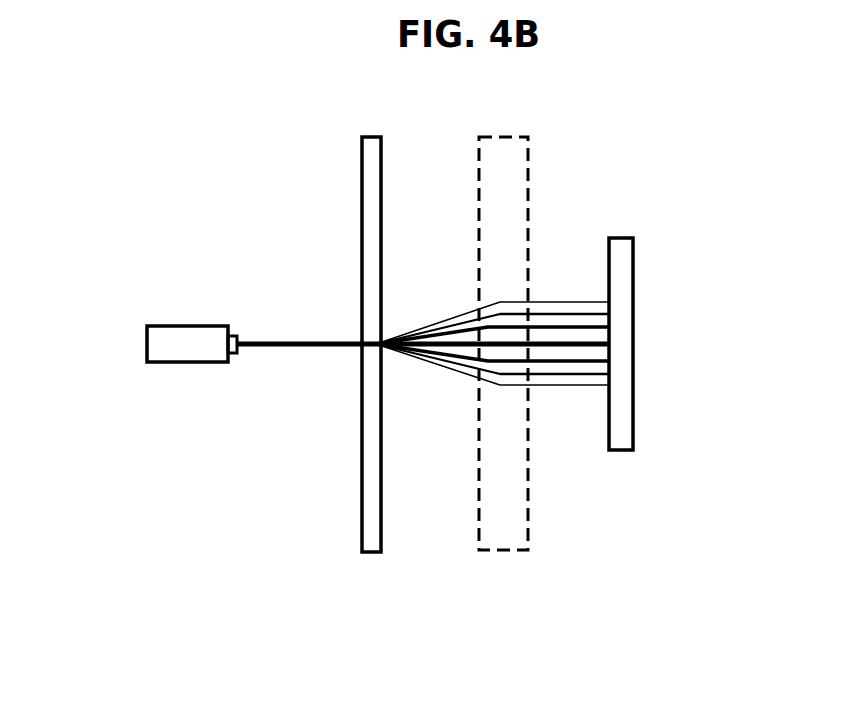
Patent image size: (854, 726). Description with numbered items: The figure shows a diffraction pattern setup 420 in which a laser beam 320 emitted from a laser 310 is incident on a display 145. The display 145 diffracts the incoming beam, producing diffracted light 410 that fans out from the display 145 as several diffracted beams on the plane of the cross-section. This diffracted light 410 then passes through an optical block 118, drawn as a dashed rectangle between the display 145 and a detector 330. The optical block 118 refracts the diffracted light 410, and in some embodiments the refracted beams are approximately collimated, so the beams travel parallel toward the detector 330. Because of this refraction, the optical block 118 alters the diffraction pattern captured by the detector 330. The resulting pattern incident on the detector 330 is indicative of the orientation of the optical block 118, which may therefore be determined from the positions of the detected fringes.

The diffraction pattern setup 420 is at (75, 118).
The laser 310 is at (188, 326).
The laser beam 320 is at (337, 335).
The display 145 is at (367, 515).
The optical block 118 is at (522, 211).
The detector 330 is at (618, 448).
The diffracted light 410 is at (459, 350).